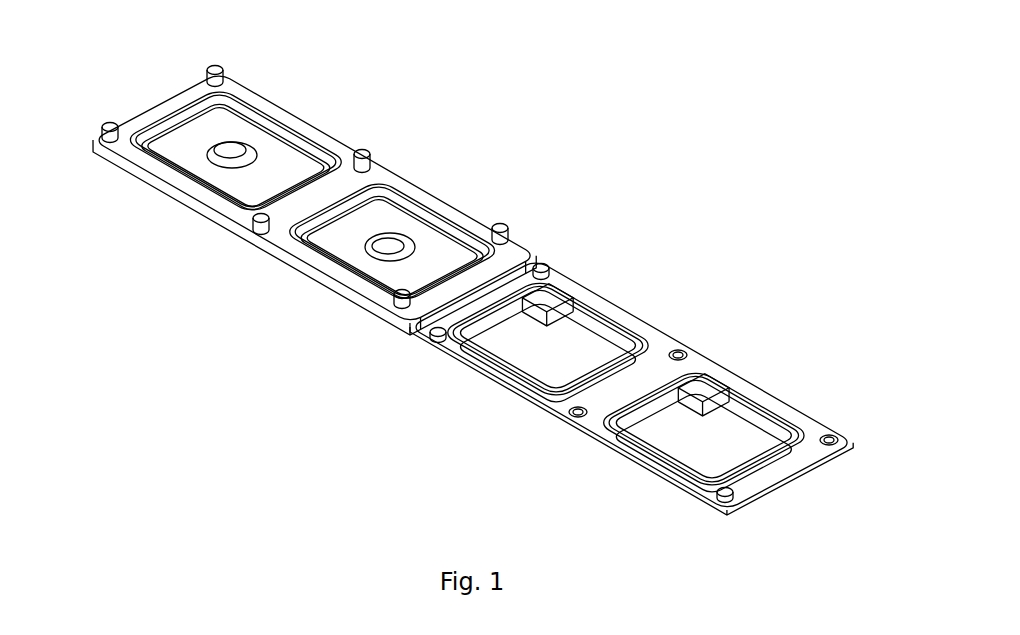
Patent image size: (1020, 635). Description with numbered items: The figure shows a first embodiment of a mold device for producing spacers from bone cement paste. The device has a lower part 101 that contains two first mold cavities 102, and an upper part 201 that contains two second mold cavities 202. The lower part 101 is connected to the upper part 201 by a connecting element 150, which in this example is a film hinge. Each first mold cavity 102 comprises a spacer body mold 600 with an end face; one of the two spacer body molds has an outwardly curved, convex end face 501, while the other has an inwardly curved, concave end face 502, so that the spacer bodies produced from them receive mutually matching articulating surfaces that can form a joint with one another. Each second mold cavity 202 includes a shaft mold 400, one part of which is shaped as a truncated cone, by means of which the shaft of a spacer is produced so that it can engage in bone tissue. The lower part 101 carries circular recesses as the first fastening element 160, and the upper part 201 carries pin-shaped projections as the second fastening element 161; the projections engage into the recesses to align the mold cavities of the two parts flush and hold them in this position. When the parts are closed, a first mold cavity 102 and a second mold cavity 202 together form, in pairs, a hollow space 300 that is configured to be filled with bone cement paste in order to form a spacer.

The lower part 101 is at (567, 228).
The first mold cavity 102 is at (698, 448).
The connecting element 150 is at (525, 258).
The first fastening element 160 is at (115, 120).
The second fastening element 161 is at (722, 497).
The upper part 201 is at (223, 48).
The second mold cavity 202 is at (180, 138).
The hollow space 300 is at (677, 427).
The shaft mold 400 is at (220, 153).
The convex end face 501 is at (535, 353).
The concave end face 502 is at (723, 445).
The spacer body mold 600 is at (693, 437).